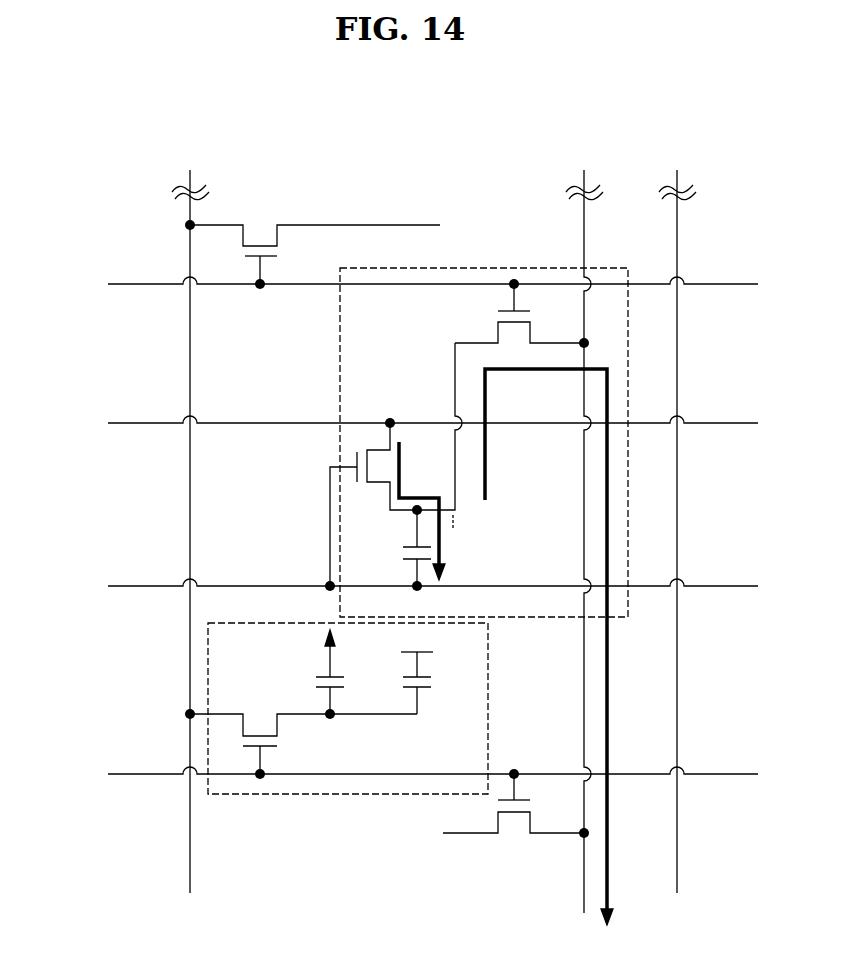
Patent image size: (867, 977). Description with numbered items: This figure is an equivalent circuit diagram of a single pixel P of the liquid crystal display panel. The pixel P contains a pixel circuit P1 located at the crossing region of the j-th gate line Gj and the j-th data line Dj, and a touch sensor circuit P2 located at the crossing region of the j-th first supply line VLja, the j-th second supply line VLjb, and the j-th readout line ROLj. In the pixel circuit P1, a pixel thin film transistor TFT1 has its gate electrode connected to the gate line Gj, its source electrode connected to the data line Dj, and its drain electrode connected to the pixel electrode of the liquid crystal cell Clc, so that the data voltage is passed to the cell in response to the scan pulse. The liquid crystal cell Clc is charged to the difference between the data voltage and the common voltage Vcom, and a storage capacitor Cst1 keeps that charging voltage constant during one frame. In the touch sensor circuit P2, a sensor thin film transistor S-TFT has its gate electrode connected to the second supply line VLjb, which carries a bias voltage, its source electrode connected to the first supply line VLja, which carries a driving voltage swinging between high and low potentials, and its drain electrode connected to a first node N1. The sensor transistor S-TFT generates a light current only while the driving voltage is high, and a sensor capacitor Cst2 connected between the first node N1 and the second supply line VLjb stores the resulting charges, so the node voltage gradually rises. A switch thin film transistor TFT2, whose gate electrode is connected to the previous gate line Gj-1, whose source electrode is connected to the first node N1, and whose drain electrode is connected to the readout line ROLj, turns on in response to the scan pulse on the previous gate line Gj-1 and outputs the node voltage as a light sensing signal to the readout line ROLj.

The pixel P is at (78, 172).
The j-th data line Dj is at (190, 515).
The (j−1)-th gate line Gj-1 is at (405, 284).
The j-th gate line Gj is at (416, 772).
The j-th first supply line VLja is at (408, 408).
The j-th second supply line VLjb is at (408, 575).
The j-th readout line ROLj is at (549, 561).
The pixel circuit P1 is at (488, 708).
The touch sensor circuit P2 is at (628, 357).
The pixel thin film transistor TFT1 is at (301, 744).
The switch thin film transistor TFT2 is at (513, 313).
The sensor thin film transistor S-TFT is at (368, 467).
The first node N1 is at (426, 511).
The storage capacitor Cst1 is at (302, 674).
The sensor capacitor Cst2 is at (447, 550).
The liquid crystal cell Clc is at (437, 683).
The common voltage Vcom is at (422, 640).